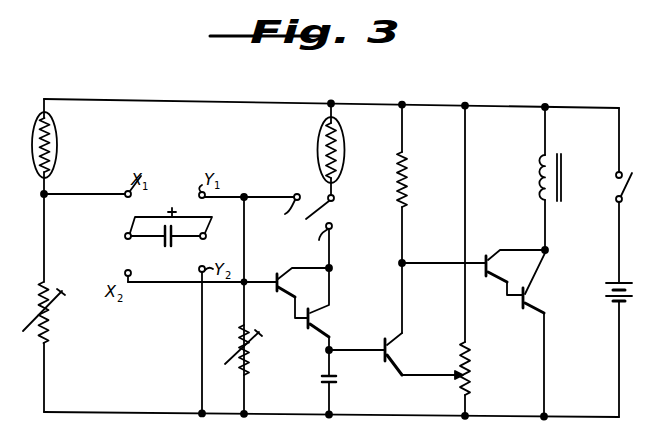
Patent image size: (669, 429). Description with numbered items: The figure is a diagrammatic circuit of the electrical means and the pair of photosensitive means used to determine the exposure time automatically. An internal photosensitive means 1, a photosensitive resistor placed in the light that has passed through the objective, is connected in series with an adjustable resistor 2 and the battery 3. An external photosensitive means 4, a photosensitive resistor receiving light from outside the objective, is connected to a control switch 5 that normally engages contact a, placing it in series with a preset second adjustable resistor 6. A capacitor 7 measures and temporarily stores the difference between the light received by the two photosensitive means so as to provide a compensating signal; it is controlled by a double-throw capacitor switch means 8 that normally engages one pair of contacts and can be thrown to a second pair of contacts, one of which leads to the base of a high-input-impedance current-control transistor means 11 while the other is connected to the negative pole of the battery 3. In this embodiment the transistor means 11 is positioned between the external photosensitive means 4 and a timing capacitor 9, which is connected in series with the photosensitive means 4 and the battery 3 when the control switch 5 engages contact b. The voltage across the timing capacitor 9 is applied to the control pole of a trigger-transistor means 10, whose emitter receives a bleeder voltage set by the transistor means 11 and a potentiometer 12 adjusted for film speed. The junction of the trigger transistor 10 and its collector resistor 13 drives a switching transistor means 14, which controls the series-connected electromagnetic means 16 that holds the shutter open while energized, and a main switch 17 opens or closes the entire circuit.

The internal photosensitive means 1 is at (59, 143).
The adjustable resistor 2 is at (56, 320).
The battery 3 is at (608, 302).
The external photosensitive means 4 is at (346, 153).
The control switch 5 is at (322, 216).
The second adjustable resistor 6 is at (249, 358).
The capacitor 7 is at (168, 250).
The capacitor switch means 8 is at (134, 219).
The timing capacitor 9 is at (340, 382).
The trigger-transistor means 10 is at (385, 362).
The current-control transistor means 11 is at (302, 328).
The potentiometer 12 is at (472, 376).
The collector resistor 13 is at (408, 186).
The switching transistor means 14 is at (502, 305).
The electromagnetic means 16 is at (539, 186).
The main switch 17 is at (613, 182).